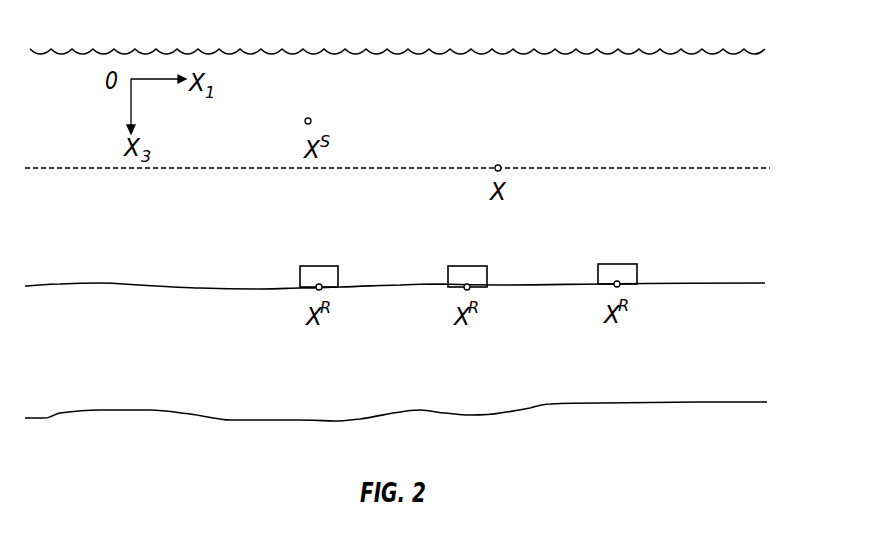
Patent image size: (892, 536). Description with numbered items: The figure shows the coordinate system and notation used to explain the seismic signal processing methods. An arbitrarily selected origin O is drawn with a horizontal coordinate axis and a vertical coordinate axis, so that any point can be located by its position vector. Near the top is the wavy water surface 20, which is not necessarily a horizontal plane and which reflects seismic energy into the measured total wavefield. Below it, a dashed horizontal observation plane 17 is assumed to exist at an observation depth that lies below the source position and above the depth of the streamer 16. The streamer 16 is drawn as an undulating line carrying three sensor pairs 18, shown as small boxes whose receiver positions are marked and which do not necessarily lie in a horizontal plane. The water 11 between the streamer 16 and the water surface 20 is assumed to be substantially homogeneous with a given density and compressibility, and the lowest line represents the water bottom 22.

The water surface 20 is at (700, 48).
The horizontal observation plane 17 is at (80, 168).
The streamer 16 is at (80, 286).
The sensor pairs 18 is at (326, 266).
The water bottom 22 is at (705, 402).
The water 11 is at (702, 362).